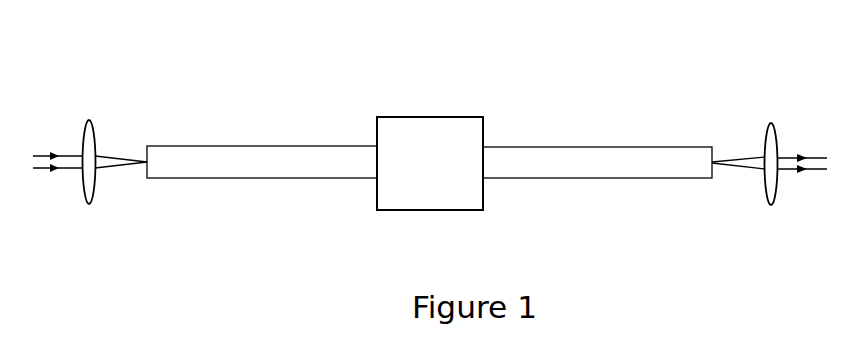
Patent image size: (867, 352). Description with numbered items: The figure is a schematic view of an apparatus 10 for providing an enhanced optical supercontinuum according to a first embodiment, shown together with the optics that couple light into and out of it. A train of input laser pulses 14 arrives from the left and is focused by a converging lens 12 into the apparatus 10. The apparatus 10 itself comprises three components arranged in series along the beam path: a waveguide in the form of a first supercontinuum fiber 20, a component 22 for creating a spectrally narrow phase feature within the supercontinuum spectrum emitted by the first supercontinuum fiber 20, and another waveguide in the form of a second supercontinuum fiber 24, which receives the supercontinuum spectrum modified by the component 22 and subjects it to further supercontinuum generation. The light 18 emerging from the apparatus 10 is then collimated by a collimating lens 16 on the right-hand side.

The apparatus for enhancing optical supercontinuum 10 is at (300, 50).
The converging lens 12 is at (94, 128).
The train of input laser pulses 14 is at (67, 140).
The collimating lens 16 is at (765, 140).
The light emerging from apparatus 18 is at (733, 180).
The first supercontinuum fiber 20 is at (273, 146).
The component for creating a spectrally narrow phase feature 22 is at (422, 116).
The second supercontinuum fiber 24 is at (620, 147).